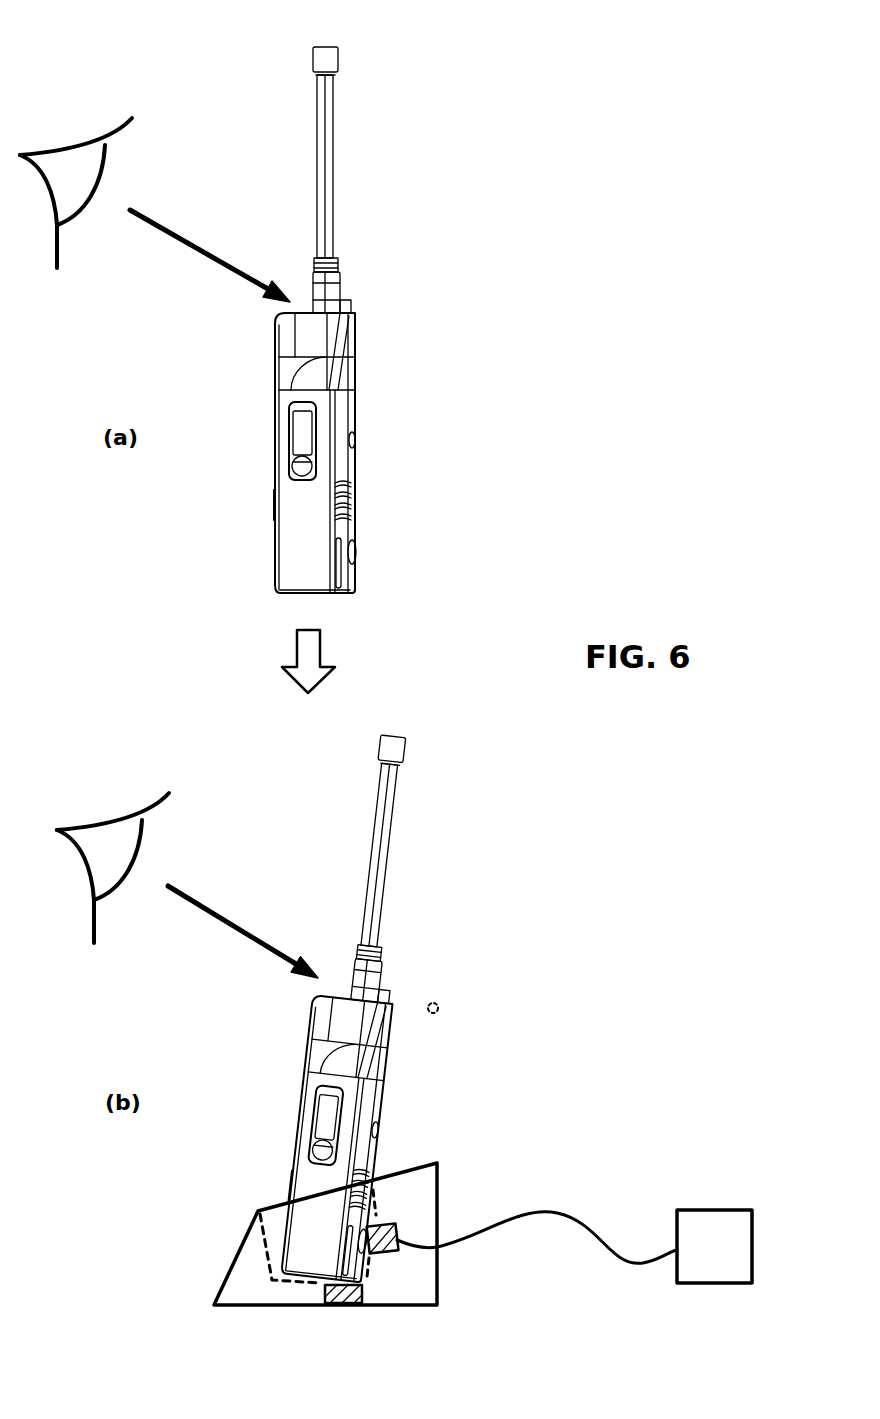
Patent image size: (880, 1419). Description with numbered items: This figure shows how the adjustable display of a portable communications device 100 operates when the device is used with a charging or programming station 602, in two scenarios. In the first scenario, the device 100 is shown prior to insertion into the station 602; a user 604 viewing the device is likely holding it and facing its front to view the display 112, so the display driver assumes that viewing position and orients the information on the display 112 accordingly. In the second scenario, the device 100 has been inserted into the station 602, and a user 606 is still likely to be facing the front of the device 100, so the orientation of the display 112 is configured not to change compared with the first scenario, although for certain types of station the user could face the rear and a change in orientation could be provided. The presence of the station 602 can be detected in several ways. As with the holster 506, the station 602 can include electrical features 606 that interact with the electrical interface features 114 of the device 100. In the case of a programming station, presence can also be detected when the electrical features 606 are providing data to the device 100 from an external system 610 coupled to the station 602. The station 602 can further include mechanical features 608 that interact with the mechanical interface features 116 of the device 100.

The portable communications device 100 is at (228, 506).
The display 112 is at (290, 308).
The electrical interface features 114 is at (356, 547).
The mechanical interface features 116 is at (356, 591).
The holster 506 is at (408, 978).
The charging or programming station 602 is at (438, 1190).
The user 604 is at (100, 125).
The user / electrical features 606 is at (90, 825).
The mechanical features 608 is at (325, 1293).
The external system 610 is at (715, 1210).